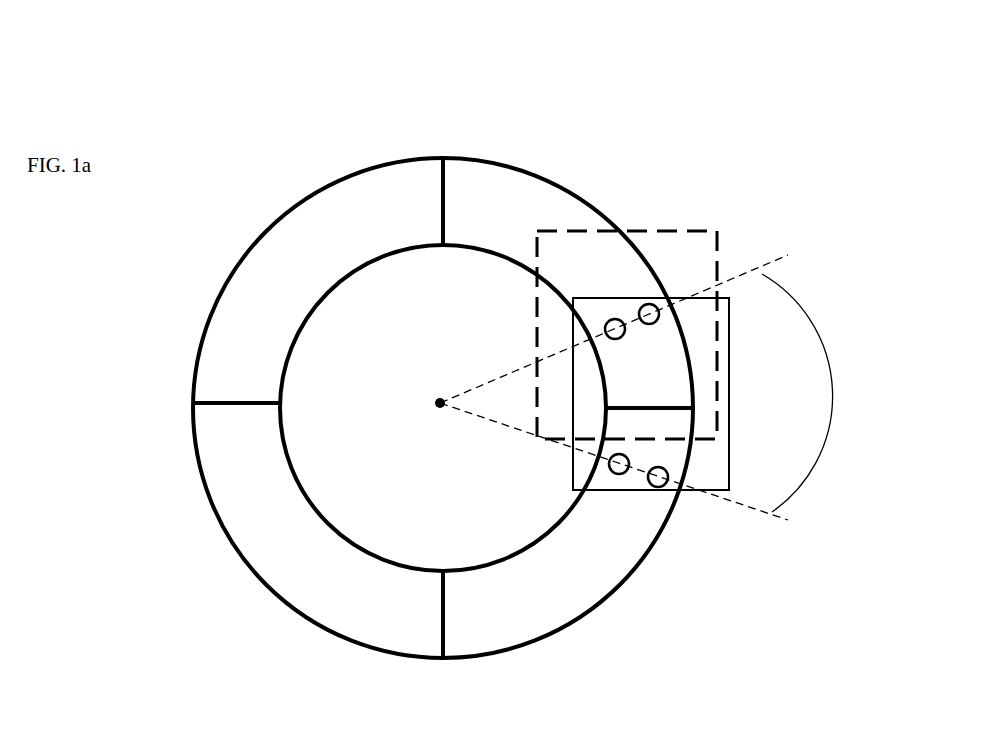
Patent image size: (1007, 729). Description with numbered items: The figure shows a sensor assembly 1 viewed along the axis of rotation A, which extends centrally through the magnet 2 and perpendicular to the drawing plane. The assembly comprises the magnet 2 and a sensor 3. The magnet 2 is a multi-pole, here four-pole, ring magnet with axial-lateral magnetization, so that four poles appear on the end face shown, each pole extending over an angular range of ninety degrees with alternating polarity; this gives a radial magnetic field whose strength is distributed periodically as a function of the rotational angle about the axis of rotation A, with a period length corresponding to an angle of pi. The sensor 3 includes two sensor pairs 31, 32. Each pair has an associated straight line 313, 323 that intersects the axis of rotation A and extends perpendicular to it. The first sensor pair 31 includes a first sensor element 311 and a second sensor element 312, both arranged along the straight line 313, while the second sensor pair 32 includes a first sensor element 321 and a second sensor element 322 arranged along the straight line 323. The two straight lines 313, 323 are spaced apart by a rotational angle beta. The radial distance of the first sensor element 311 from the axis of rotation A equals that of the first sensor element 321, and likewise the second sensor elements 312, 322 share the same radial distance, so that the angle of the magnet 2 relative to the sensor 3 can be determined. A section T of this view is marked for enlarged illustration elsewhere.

The sensor assembly 1 is at (168, 575).
The magnet 2 is at (322, 185).
The sensor 3 is at (695, 493).
The first sensor pair 31 is at (666, 224).
The first sensor element 311 is at (615, 319).
The second sensor element 312 is at (656, 305).
The straight line 313 is at (768, 262).
The second sensor pair 32 is at (653, 591).
The first sensor element 321 is at (617, 474).
The second sensor element 322 is at (663, 486).
The straight line 323 is at (770, 512).
The axis of rotation A is at (441, 401).
The section T is at (660, 231).